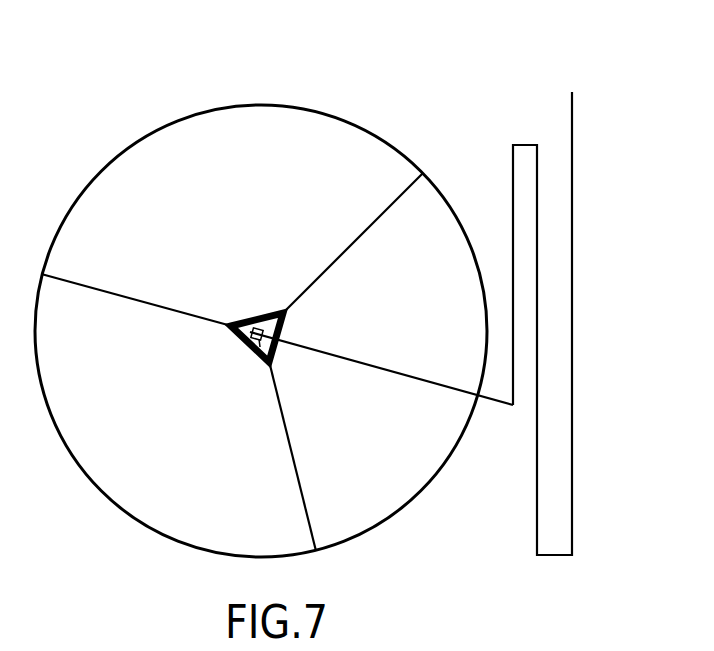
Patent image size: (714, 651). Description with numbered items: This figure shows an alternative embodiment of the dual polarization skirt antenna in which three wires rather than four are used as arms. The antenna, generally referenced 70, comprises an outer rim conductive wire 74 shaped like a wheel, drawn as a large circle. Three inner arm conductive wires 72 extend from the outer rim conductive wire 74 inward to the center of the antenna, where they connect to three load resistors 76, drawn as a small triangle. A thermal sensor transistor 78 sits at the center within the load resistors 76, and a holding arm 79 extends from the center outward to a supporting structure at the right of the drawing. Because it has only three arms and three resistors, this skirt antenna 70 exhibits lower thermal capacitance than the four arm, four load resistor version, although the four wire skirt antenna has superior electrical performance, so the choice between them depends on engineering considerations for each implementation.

The skirt antenna 70 is at (506, 65).
The inner arm conductive wires 72 is at (342, 252).
The outer rim conductive wire 74 is at (350, 124).
The load resistors 76 is at (265, 315).
The thermal sensor transistor 78 is at (253, 355).
The holding arm 79 is at (353, 362).